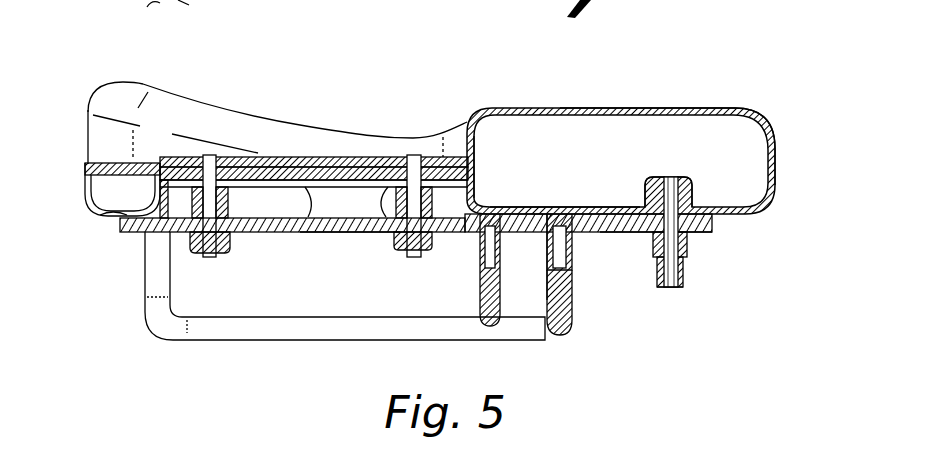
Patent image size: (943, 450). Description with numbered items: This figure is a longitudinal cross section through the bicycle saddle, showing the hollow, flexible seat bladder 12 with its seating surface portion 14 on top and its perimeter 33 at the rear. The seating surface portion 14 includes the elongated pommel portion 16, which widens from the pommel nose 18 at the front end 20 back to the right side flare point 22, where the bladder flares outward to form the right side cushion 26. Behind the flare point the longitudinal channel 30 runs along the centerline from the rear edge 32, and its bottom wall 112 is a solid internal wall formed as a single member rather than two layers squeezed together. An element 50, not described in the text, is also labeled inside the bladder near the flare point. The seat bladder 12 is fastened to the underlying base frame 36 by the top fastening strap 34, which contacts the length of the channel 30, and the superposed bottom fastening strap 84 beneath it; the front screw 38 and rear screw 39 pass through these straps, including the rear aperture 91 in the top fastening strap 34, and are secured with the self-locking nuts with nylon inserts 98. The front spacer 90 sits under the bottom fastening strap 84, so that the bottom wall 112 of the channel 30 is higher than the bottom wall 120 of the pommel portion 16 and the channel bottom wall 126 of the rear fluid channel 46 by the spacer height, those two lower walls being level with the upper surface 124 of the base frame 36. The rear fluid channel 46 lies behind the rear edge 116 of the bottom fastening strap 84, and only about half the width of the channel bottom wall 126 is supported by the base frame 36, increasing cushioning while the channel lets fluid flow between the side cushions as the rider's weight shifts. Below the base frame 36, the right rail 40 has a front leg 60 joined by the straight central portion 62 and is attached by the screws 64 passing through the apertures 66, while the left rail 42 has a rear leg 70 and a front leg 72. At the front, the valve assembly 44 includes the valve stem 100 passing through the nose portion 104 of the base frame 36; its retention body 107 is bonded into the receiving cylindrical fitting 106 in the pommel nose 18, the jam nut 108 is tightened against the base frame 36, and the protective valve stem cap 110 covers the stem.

The seat bladder 12 is at (582, 108).
The seating surface portion 14 is at (167, 96).
The pommel portion 16 is at (663, 108).
The pommel nose 18 is at (750, 117).
The front end 20 is at (776, 168).
The right side flare point 22 is at (468, 118).
The right side cushion 26 is at (88, 117).
The longitudinal channel 30 is at (182, 148).
The rear edge 32 is at (88, 130).
The perimeter 33 is at (122, 80).
The top fastening strap 34 is at (258, 157).
The base frame 36 is at (712, 228).
The front screw 38 is at (413, 137).
The rear screw 39 is at (210, 155).
The right rail 40 is at (475, 293).
The left rail 42 is at (205, 340).
The valve assembly 44 is at (688, 282).
The rear fluid channel 46 is at (85, 185).
The inner wall 50 is at (480, 140).
The front leg 60 is at (478, 262).
The straight central portion 62 is at (318, 340).
The screws 64 is at (572, 247).
The apertures 66 is at (540, 243).
The rear leg 70 is at (143, 283).
The front leg 72 is at (573, 292).
The bottom fastening strap 84 is at (335, 232).
The front spacer 90 is at (385, 206).
The rear aperture 91 is at (228, 197).
The self-locking nuts with nylon inserts 98 is at (222, 250).
The valve stem 100 is at (686, 250).
The nose portion 104 is at (715, 232).
The receiving cylindrical fitting 106 is at (650, 177).
The retention body 107 is at (690, 186).
The jam nut 108 is at (652, 235).
The protective valve stem cap 110 is at (671, 290).
The bottom wall 112 is at (318, 165).
The rear edge 116 is at (130, 237).
The bottom wall 120 is at (603, 212).
The upper surface 124 is at (190, 253).
The channel bottom wall 126 is at (107, 213).